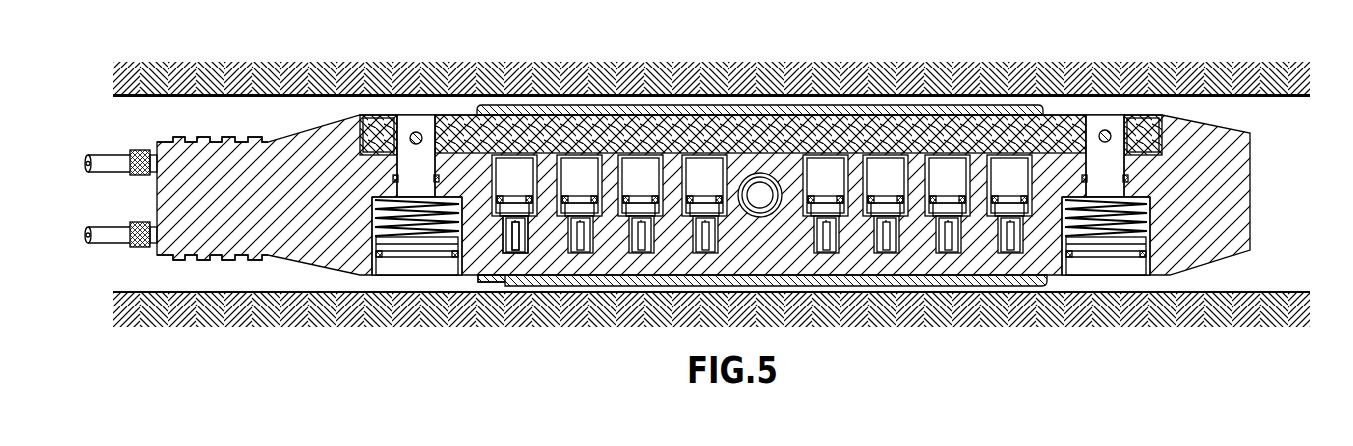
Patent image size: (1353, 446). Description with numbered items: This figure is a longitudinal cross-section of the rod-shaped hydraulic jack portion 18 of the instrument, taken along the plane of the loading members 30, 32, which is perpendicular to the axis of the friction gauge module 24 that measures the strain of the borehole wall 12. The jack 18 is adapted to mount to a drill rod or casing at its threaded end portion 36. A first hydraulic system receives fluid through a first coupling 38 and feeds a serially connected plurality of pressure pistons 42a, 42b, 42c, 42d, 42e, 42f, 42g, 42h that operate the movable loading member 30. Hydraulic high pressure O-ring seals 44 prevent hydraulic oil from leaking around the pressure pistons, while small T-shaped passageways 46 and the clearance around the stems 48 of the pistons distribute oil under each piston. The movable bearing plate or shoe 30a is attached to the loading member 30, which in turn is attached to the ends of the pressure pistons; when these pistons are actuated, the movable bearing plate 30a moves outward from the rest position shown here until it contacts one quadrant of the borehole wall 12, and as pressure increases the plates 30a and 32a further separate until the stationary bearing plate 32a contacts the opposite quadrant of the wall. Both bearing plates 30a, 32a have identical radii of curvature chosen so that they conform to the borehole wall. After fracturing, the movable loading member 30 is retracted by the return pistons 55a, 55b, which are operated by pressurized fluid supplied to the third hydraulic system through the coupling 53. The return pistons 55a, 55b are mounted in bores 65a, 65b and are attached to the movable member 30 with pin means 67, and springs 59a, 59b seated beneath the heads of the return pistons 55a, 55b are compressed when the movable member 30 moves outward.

The borehole wall 12 is at (792, 98).
The jack portion 18 is at (916, 58).
The friction gauge module 24 is at (769, 180).
The movable loading member 30 is at (674, 133).
The movable bearing plate 30a is at (585, 110).
The loading member 32 is at (850, 268).
The stationary bearing plate 32a is at (632, 288).
The threaded end portion 36 is at (229, 137).
The first coupling 38 is at (142, 247).
The pressure piston 42a is at (530, 188).
The pressure piston 42b is at (595, 188).
The pressure piston 42c is at (656, 188).
The pressure piston 42d is at (720, 188).
The pressure piston 42e is at (841, 188).
The pressure piston 42f is at (901, 188).
The pressure piston 42g is at (963, 188).
The pressure piston 42h is at (1025, 188).
The hydraulic high pressure O-ring seals 44 is at (703, 195).
The T-shaped passageways 46 is at (503, 252).
The piston stem 48 is at (516, 252).
The coupling 53 is at (141, 150).
The return piston 55a is at (412, 268).
The return piston 55b is at (1083, 262).
The spring 59a is at (380, 215).
The spring 59b is at (1140, 215).
The bore 65a is at (380, 259).
The bore 65b is at (1142, 262).
The pin means 67 is at (410, 136).